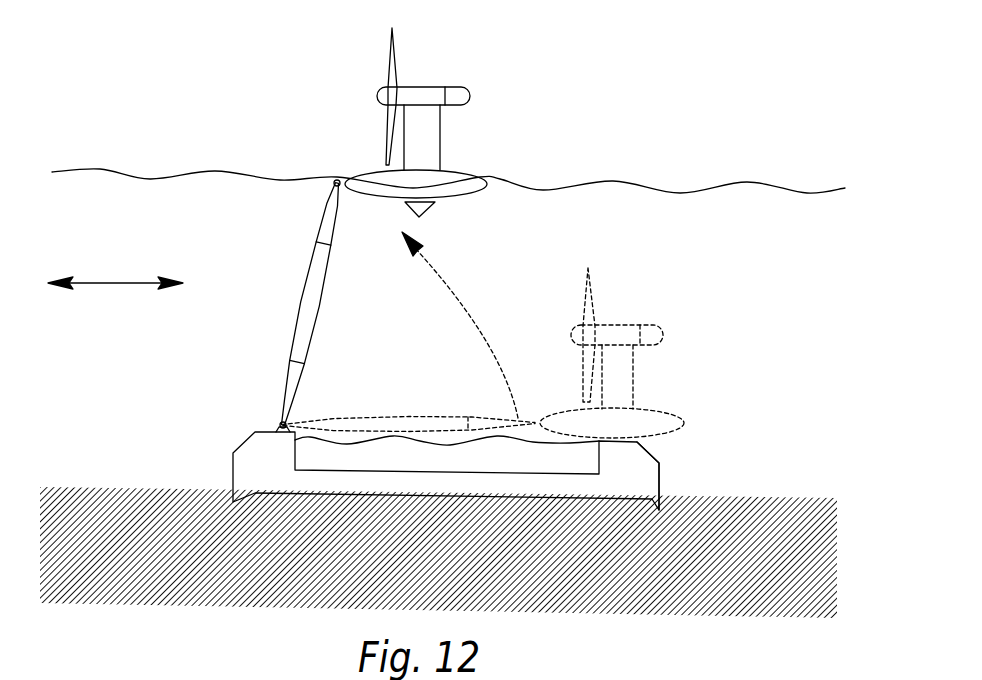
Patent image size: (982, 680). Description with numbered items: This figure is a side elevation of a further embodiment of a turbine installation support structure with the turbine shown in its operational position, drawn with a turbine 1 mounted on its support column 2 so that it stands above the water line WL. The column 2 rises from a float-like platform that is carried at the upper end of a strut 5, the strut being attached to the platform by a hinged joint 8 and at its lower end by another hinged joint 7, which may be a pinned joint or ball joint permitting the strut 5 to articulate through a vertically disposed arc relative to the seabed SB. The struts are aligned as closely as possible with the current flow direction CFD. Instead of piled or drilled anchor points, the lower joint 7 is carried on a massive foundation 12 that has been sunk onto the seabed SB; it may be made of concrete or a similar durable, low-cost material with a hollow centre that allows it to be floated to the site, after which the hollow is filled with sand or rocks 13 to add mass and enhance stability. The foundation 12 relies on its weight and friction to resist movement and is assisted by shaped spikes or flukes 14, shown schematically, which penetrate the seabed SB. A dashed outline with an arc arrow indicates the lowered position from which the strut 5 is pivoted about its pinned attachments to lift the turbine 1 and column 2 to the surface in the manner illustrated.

The rotor blade 1 is at (390, 62).
The support column 2 is at (425, 138).
The strut 5 is at (305, 288).
The hinged joint 7 is at (279, 424).
The hinged joint 8 is at (335, 180).
The massive foundation 12 is at (250, 450).
The sand or rocks 13 is at (411, 452).
The shaped spikes or flukes 14 is at (660, 500).
The water line WL is at (137, 177).
The current flow direction CFD is at (115, 269).
The seabed SB is at (125, 508).